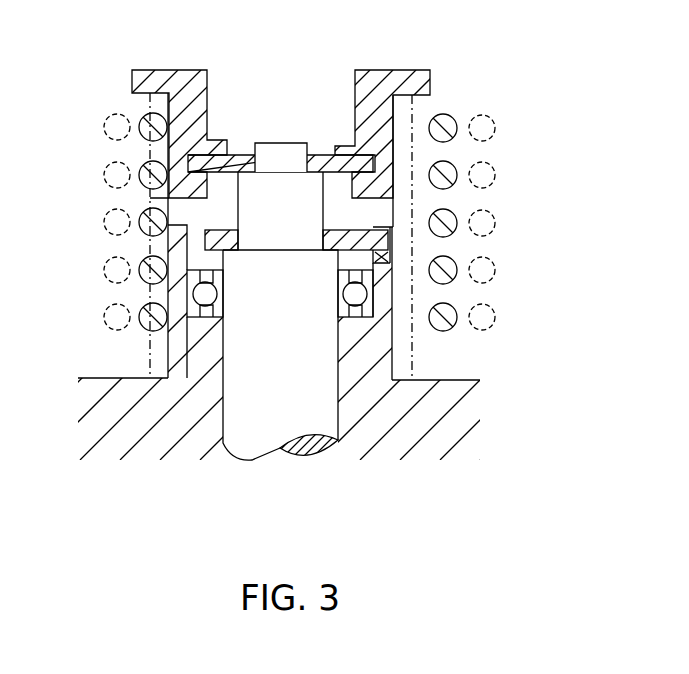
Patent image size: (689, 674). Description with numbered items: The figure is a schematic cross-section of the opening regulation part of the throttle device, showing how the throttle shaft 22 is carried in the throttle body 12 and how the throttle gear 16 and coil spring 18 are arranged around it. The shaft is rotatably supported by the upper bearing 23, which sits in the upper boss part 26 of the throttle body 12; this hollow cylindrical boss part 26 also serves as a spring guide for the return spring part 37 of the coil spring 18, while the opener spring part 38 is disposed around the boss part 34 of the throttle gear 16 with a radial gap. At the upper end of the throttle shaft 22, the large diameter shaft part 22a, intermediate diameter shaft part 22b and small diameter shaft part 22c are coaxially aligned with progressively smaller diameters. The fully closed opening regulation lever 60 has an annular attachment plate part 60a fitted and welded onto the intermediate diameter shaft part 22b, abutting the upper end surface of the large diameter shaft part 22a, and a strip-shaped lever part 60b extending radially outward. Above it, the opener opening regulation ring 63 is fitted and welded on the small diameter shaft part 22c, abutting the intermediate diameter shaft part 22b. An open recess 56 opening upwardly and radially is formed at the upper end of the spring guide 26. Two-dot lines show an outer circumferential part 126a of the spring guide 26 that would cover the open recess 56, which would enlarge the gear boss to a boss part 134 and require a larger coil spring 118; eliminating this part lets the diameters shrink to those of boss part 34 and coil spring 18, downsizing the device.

The throttle body 12 is at (428, 456).
The throttle gear 16 is at (400, 68).
The coil spring 18 is at (457, 212).
The throttle shaft 22 is at (235, 463).
The large diameter shaft part 22a is at (258, 444).
The intermediate diameter shaft part 22b is at (307, 193).
The small diameter shaft part 22c is at (278, 157).
The upper bearing 23 is at (193, 295).
The upper boss part 26 is at (383, 297).
The boss part 34 is at (383, 115).
The return spring part 37 is at (457, 330).
The opener spring part 38 is at (455, 120).
The open recess 56 is at (386, 258).
The fully closed opening regulation lever 60 is at (301, 179).
The attachment plate part 60a is at (207, 240).
The lever part 60b is at (385, 238).
The opener opening regulation ring 63 is at (370, 163).
The coil spring 118 is at (108, 118).
The outer circumferential part 126a is at (405, 366).
The boss part 134 is at (162, 152).